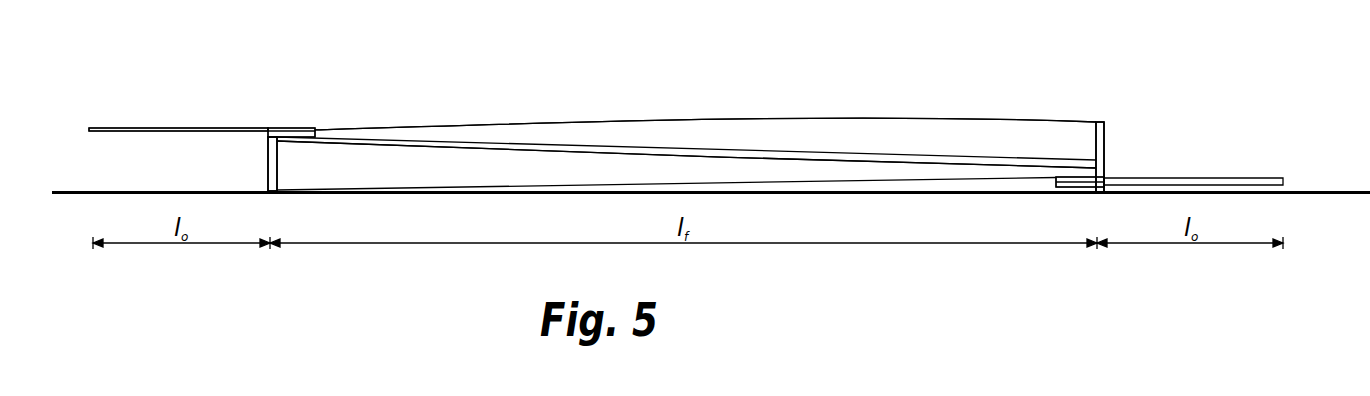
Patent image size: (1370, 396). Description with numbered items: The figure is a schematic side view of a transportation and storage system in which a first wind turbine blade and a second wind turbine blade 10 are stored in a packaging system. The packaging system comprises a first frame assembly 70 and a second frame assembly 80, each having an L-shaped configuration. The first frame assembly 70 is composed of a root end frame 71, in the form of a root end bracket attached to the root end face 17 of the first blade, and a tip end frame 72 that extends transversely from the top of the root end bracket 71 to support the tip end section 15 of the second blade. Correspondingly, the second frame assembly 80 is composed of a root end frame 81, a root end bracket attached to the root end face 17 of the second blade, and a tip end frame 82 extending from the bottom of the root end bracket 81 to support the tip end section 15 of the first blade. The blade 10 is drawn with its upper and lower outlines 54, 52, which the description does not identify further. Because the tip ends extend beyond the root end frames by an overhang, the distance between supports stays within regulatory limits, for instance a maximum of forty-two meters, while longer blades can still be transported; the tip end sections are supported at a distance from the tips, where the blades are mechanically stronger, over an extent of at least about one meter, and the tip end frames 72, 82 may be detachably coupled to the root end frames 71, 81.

The wind turbine blade 10 is at (606, 112).
The tip end section 15 is at (313, 127).
The root end face 17 is at (268, 189).
The suction side surface 52 is at (818, 155).
The pressure side surface 54 is at (713, 118).
The first frame assembly 70 is at (275, 116).
The root end frame 71 is at (268, 157).
The tip end frame 72 is at (297, 128).
The second frame assembly 80 is at (1124, 120).
The root end frame 81 is at (1105, 158).
The tip end frame 82 is at (1070, 187).